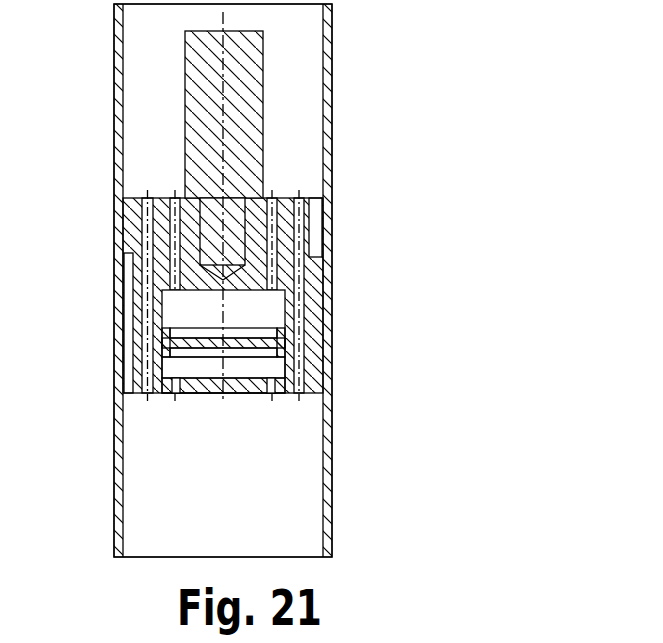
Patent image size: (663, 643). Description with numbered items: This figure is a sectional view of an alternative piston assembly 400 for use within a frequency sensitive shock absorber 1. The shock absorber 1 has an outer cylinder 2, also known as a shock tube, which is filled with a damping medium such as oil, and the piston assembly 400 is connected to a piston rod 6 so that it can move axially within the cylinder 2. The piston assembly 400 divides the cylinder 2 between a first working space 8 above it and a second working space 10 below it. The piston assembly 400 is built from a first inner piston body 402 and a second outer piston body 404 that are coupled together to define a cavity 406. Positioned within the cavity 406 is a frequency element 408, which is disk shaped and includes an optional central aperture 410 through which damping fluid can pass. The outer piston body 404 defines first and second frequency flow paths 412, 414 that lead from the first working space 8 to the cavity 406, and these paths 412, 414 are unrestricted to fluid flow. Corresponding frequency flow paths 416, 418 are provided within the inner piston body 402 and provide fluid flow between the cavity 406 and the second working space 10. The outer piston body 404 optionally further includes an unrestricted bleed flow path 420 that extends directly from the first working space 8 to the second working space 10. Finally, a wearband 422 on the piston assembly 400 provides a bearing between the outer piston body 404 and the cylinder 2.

The shock absorber 1 is at (48, 44).
The outer cylinder 2 is at (331, 138).
The piston rod 6 is at (200, 148).
The first working space 8 is at (149, 83).
The second working space 10 is at (163, 474).
The piston assembly 400 is at (283, 176).
The inner piston body 402 is at (235, 394).
The outer piston body 404 is at (133, 253).
The cavity 406 is at (182, 370).
The frequency element 408 is at (192, 345).
The central aperture 410 is at (236, 349).
The first frequency flow path 412 is at (172, 208).
The second frequency flow path 414 is at (277, 220).
The frequency flow path 416 is at (162, 390).
The frequency flow path 418 is at (283, 393).
The bleed flow path 420 is at (303, 283).
The wearband 422 is at (318, 265).